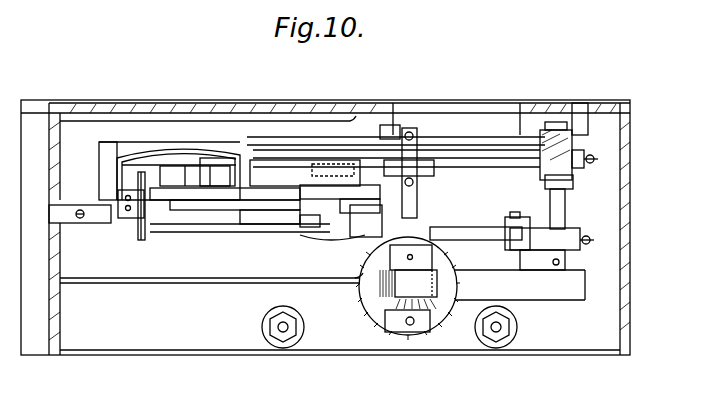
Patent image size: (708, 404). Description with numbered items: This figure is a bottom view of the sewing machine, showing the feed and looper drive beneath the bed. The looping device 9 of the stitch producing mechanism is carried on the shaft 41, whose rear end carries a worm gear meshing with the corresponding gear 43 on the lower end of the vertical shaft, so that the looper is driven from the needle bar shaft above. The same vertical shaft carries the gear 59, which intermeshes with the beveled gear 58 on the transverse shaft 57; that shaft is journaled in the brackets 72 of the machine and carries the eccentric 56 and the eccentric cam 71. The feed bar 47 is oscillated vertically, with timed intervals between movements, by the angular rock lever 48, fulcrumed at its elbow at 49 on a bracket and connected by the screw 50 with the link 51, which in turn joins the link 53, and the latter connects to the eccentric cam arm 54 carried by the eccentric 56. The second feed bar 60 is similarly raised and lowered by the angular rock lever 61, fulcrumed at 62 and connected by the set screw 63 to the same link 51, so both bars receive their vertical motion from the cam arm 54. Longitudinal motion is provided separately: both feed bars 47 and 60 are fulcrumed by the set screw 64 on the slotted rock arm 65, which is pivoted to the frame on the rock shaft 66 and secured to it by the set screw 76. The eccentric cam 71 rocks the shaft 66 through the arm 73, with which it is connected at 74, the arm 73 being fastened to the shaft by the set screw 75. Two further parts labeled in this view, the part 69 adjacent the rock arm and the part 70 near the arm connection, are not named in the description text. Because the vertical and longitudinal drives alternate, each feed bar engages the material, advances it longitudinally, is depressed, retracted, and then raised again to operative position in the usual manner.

The looping device 9 is at (135, 238).
The shaft 41 is at (302, 225).
The gear 43 is at (370, 298).
The feed bar 47 is at (122, 158).
The angular rock lever 48 is at (186, 186).
The fulcrum 49 is at (222, 160).
The screw 50 is at (215, 200).
The link 51 is at (238, 210).
The link 53 is at (252, 224).
The eccentric cam arm 54 is at (360, 240).
The eccentric 56 is at (436, 205).
The transverse shaft 57 is at (407, 147).
The beveled gear 58 is at (405, 332).
The gear 59 is at (392, 300).
The feed bar 60 is at (365, 158).
The angular rock lever 61 is at (310, 176).
The fulcrum 62 is at (335, 165).
The set screw 63 is at (360, 202).
The set screw 64 is at (554, 122).
The slotted rock arm 65 is at (584, 150).
The rock shaft 66 is at (565, 212).
The nut 69 is at (573, 184).
The connecting rod 70 is at (460, 242).
The eccentric cam 71 is at (436, 262).
The brackets 72 is at (416, 201).
The arm 73 is at (533, 250).
The connection 74 is at (520, 217).
The set screw 75 is at (594, 240).
The set screw 76 is at (598, 159).